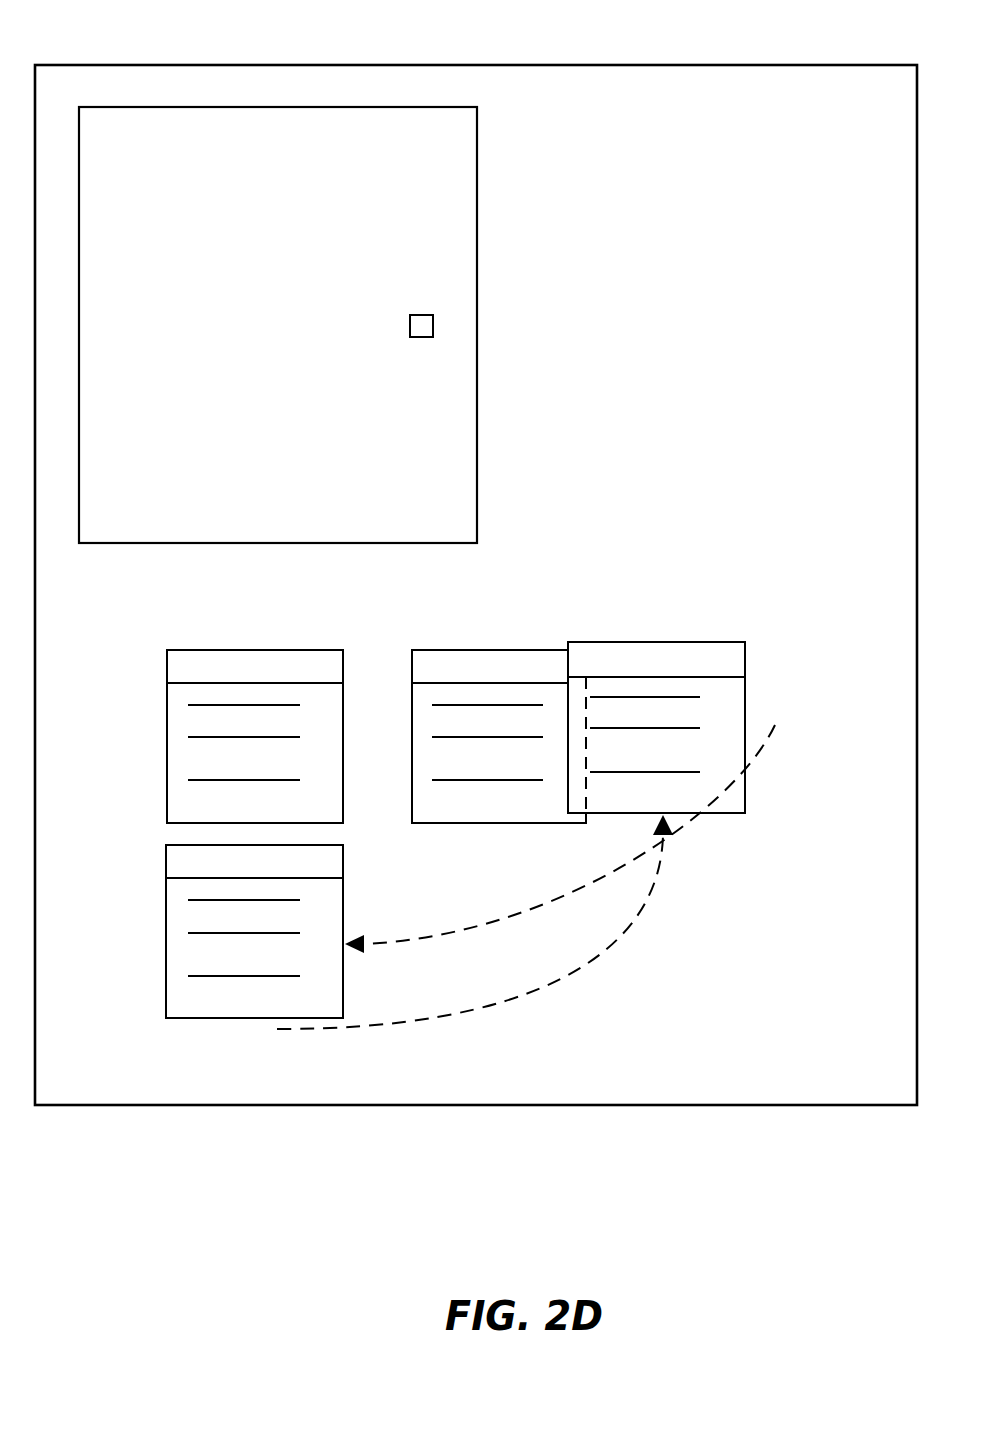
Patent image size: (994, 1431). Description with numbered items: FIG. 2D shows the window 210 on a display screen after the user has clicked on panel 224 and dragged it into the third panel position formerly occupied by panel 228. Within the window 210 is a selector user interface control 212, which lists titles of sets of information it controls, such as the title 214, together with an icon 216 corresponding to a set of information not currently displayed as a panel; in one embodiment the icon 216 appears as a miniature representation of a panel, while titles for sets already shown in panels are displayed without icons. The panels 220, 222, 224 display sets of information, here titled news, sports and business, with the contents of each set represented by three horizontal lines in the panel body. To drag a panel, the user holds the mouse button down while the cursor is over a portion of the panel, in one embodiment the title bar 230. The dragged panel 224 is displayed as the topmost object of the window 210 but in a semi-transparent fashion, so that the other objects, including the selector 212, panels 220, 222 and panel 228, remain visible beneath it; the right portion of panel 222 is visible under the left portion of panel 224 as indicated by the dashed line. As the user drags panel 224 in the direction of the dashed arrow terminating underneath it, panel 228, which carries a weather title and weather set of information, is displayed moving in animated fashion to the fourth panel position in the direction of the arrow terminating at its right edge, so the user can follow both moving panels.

The window 210 is at (305, 65).
The selector user interface control 212 is at (477, 172).
The title 214 is at (227, 237).
The icon 216 is at (433, 330).
The panel 220 is at (217, 650).
The panel 222 is at (453, 650).
The panel 224 is at (617, 642).
The panel 228 is at (210, 1018).
The title bar 230 is at (743, 650).